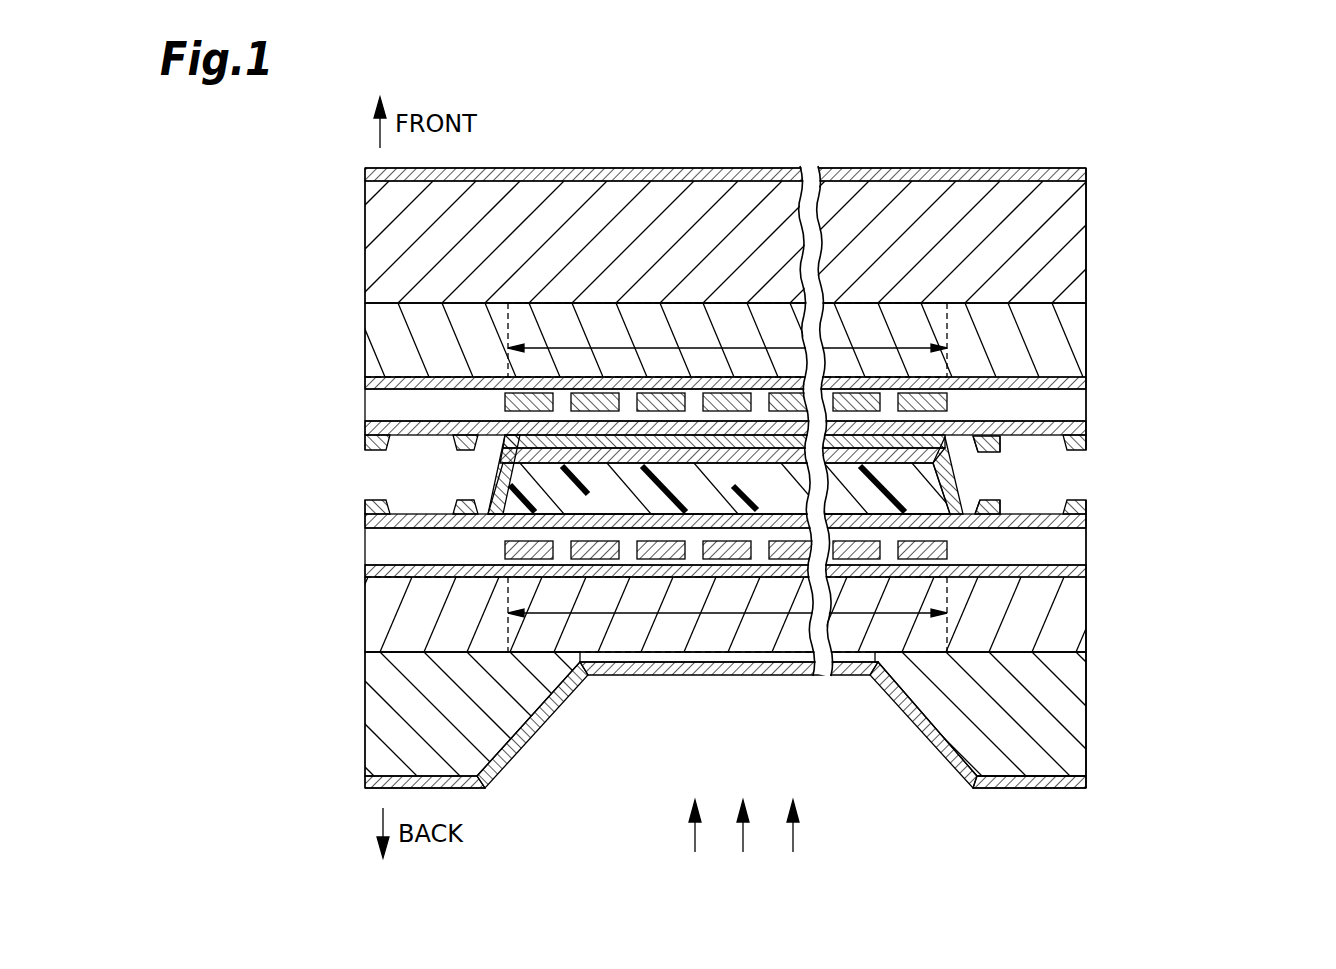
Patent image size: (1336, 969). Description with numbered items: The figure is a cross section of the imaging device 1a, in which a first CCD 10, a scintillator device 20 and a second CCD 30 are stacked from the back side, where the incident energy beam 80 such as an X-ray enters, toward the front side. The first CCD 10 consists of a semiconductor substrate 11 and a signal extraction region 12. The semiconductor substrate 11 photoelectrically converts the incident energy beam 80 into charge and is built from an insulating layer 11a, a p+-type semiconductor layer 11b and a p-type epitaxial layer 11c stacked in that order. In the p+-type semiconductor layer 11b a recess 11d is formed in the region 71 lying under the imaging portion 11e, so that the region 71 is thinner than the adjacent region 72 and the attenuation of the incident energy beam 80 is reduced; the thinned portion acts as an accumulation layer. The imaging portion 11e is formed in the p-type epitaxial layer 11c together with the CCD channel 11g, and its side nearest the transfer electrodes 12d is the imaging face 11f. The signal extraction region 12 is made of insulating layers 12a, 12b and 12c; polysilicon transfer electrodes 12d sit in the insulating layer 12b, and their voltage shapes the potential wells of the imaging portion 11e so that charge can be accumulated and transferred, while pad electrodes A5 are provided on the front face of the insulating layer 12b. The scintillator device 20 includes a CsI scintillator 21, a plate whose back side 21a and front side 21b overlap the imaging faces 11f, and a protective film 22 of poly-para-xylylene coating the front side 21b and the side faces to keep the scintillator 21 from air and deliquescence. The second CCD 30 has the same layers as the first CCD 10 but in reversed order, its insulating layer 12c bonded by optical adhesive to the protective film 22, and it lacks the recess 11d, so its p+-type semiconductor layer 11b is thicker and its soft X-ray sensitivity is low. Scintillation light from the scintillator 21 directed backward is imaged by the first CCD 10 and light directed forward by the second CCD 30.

The imaging device 1a is at (1164, 128).
The first CCD 10 is at (1239, 532).
The semiconductor substrate 11 is at (1181, 152).
The insulating layer 11a is at (1088, 178).
The p+-type semiconductor layer 11b is at (1088, 265).
The p-type epitaxial layer 11c is at (1088, 338).
The recess 11d is at (626, 722).
The imaging portion 11e is at (498, 334).
The imaging face 11f is at (611, 466).
The CCD channel 11g is at (677, 348).
The signal extraction region 12 is at (1181, 363).
The insulating layer 12a is at (1088, 384).
The insulating layer 12b is at (1088, 410).
The insulating layer 12c is at (1000, 457).
The transfer electrodes 12d is at (958, 400).
The scintillator device 20 is at (303, 447).
The scintillator 21 is at (497, 492).
The back side 21a is at (520, 530).
The front side 21b is at (520, 421).
The protective film 22 is at (510, 448).
The second CCD 30 is at (1237, 235).
The region 71 is at (748, 663).
The region 72 is at (1025, 776).
The incident energy beam 80 is at (745, 835).
The pad electrodes A5 is at (1030, 432).